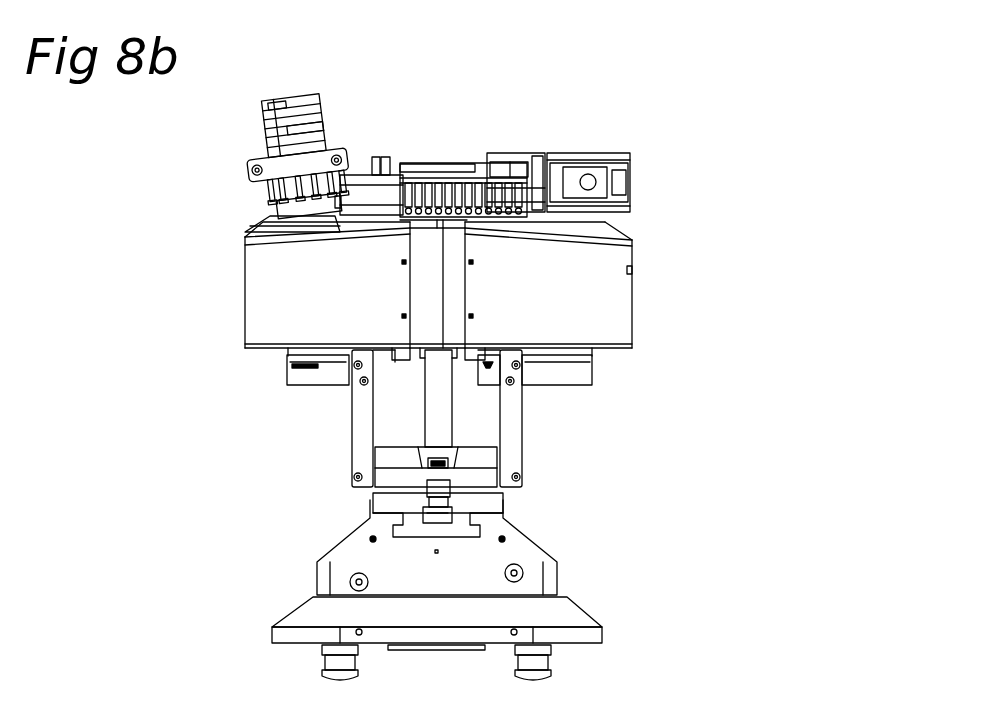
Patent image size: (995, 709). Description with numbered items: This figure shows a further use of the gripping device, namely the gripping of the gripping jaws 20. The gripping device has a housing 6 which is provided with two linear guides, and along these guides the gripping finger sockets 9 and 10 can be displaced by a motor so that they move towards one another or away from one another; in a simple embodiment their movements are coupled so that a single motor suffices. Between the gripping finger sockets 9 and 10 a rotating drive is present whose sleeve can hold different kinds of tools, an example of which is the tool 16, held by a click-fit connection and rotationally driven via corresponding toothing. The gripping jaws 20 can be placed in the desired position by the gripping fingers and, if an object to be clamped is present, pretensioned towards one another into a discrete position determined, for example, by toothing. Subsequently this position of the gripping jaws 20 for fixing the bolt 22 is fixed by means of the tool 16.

The housing 6 is at (608, 268).
The gripping finger socket 9 is at (290, 360).
The gripping finger socket 10 is at (586, 353).
The tool 16 is at (435, 406).
The gripping jaws 20 is at (487, 456).
The bolt 22 is at (437, 471).